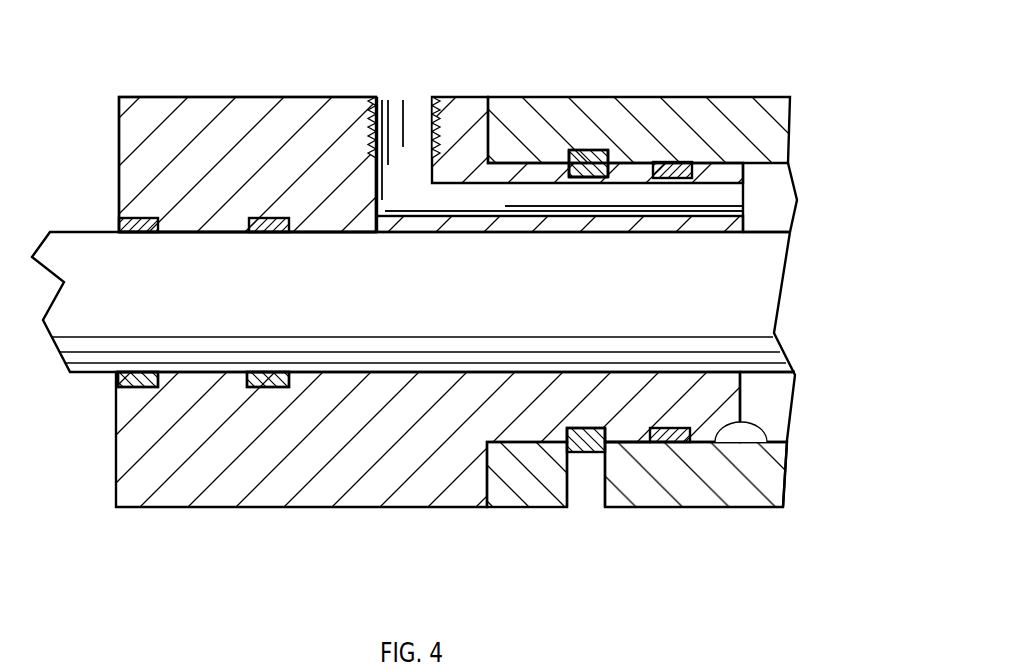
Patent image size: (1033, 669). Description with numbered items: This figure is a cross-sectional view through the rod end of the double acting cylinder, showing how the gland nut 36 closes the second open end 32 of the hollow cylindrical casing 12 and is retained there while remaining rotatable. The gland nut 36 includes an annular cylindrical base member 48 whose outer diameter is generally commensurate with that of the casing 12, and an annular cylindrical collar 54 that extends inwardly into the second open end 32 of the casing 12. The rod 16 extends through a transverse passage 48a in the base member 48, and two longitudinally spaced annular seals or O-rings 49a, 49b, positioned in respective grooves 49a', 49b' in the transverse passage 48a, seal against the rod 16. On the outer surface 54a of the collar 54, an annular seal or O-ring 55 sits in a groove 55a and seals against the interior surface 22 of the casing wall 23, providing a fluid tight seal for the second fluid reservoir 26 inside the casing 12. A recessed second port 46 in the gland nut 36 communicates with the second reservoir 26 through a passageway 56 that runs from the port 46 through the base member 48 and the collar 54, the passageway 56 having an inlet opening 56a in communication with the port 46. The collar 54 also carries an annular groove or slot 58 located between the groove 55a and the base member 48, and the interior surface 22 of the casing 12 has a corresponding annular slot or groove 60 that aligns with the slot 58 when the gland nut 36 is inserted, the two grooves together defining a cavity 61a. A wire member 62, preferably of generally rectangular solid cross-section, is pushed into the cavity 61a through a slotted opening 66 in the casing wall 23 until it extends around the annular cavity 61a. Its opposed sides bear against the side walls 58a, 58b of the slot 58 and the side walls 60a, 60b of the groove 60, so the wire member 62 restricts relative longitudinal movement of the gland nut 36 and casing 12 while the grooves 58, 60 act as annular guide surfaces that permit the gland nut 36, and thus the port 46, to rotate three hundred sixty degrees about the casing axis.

The casing 12 is at (768, 98).
The rod 16 is at (750, 245).
The interior surface 22 is at (785, 460).
The casing wall 23 is at (580, 150).
The second fluid reservoir 26 is at (773, 402).
The second open end 32 is at (487, 455).
The gland nut 36 is at (204, 90).
The second port 46 is at (429, 92).
The annular cylindrical base member 48 is at (147, 110).
The transverse passage 48a is at (311, 241).
The annular seal or O-ring 49a is at (104, 408).
The groove 49a' is at (134, 467).
The annular seal or O-ring 49b is at (264, 486).
The groove 49b' is at (302, 464).
The annular cylindrical collar 54 is at (672, 162).
The outer surface 54a is at (620, 444).
The annular seal or O-ring 55 is at (670, 444).
The groove 55a is at (652, 428).
The passageway 56 is at (460, 205).
The inlet opening 56a is at (397, 140).
The annular groove or slot 58 is at (588, 428).
The side wall 58a is at (570, 430).
The side wall 58b is at (606, 428).
The annular slot or groove 60 is at (592, 150).
The side wall 60a is at (570, 152).
The side wall 60b is at (608, 152).
The cavity 61a is at (583, 510).
The wire member 62 is at (580, 178).
The slotted opening 66 is at (566, 508).